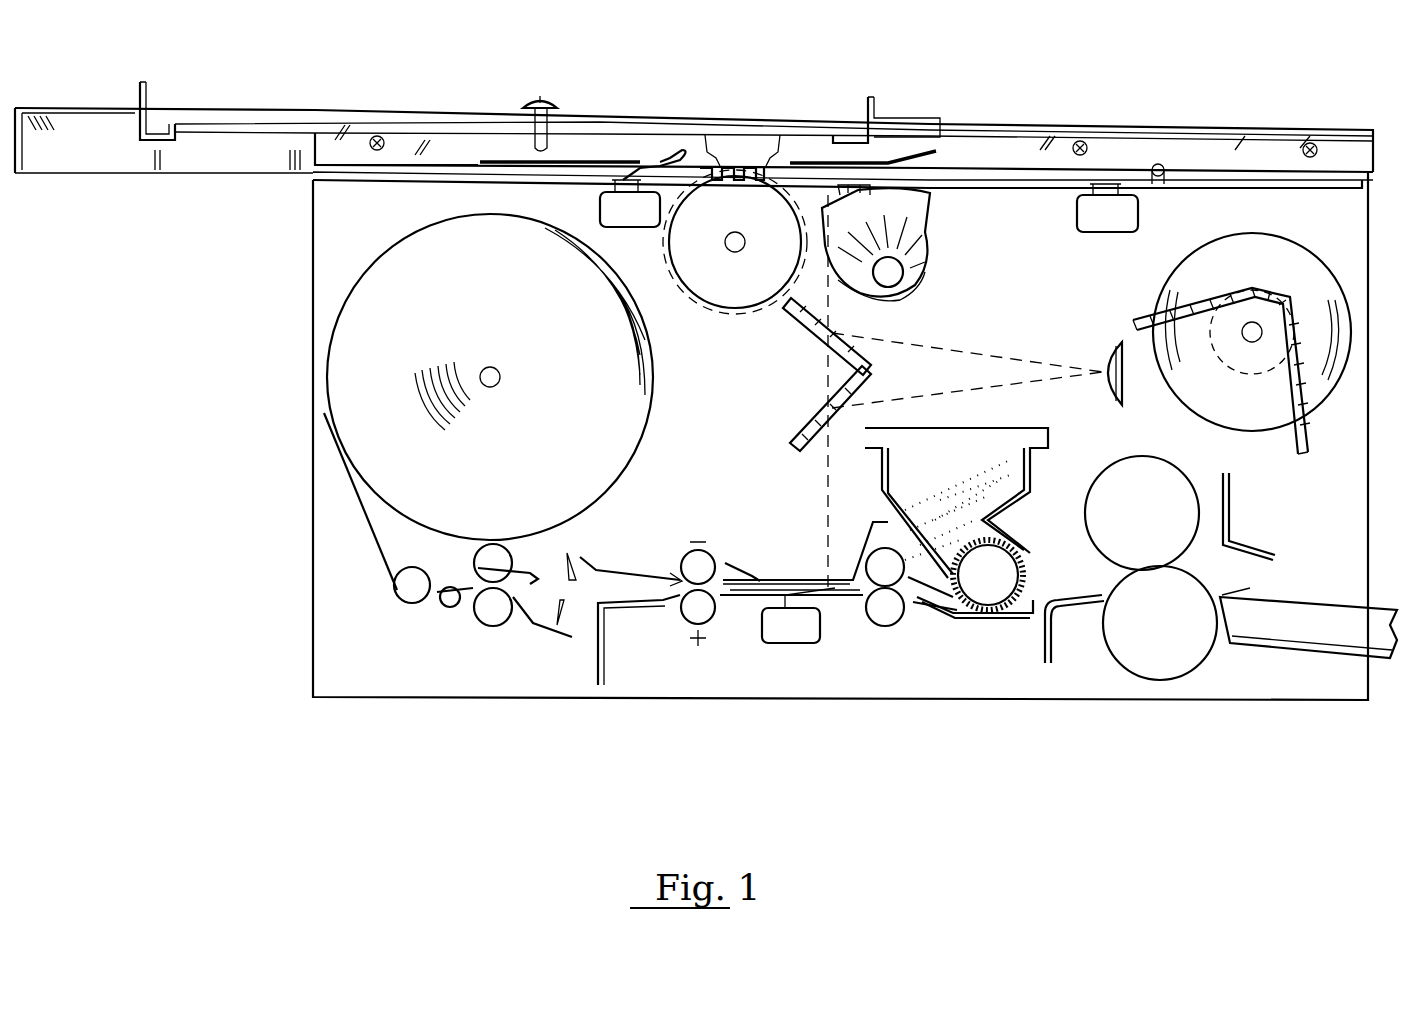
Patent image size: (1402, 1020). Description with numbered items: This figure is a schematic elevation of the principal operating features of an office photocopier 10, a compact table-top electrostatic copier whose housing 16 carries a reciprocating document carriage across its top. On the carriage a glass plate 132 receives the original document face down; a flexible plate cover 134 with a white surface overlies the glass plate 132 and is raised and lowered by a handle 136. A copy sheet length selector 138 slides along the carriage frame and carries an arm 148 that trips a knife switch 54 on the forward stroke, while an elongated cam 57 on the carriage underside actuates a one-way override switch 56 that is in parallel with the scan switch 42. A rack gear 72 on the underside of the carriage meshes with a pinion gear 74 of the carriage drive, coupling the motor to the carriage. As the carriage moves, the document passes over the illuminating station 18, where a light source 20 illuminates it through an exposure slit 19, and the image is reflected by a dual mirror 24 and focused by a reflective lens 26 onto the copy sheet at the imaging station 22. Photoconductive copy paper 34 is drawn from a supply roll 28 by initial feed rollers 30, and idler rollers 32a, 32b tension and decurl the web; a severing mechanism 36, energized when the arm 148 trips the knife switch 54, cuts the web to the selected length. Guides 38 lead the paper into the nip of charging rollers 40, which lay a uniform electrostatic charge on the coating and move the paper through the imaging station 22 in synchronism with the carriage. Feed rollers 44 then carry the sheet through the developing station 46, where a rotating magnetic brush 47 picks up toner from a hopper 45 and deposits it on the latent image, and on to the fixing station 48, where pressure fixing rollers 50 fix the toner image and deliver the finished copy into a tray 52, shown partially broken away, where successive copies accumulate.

The office photocopier 10 is at (1208, 94).
The housing 16 is at (1295, 218).
The illuminating station 18 is at (922, 218).
The exposure slit 19 is at (876, 246).
The light source 20 is at (904, 282).
The imaging station 22 is at (828, 578).
The dual mirror 24 is at (796, 352).
The reflective lens 26 is at (1124, 400).
The supply roll 28 is at (352, 400).
The initial feed rollers 30 is at (490, 613).
The idler roller 32a is at (405, 596).
The idler roller 32b is at (447, 608).
The copy paper 34 is at (366, 517).
The severing mechanism 36 is at (598, 565).
The guides 38 is at (612, 600).
The charging rollers 40 is at (735, 592).
The scan switch 42 is at (808, 645).
The feed rollers 44 is at (890, 615).
The hopper 45 is at (1020, 470).
The developing station 46 is at (1054, 552).
The magnetic brush 47 is at (1036, 604).
The fixing station 48 is at (1088, 632).
The pressure fixing rollers 50 is at (1172, 490).
The tray 52 is at (1352, 643).
The knife switch 54 is at (642, 228).
The override switch 56 is at (1117, 232).
The cam 57 is at (975, 133).
The rack gear 72 is at (766, 162).
The pinion gear 74 is at (752, 216).
The glass plate 132 is at (400, 128).
The plate cover 134 is at (748, 113).
The handle 136 is at (880, 124).
The copy sheet length selector 138 is at (550, 100).
The arm 148 is at (672, 152).